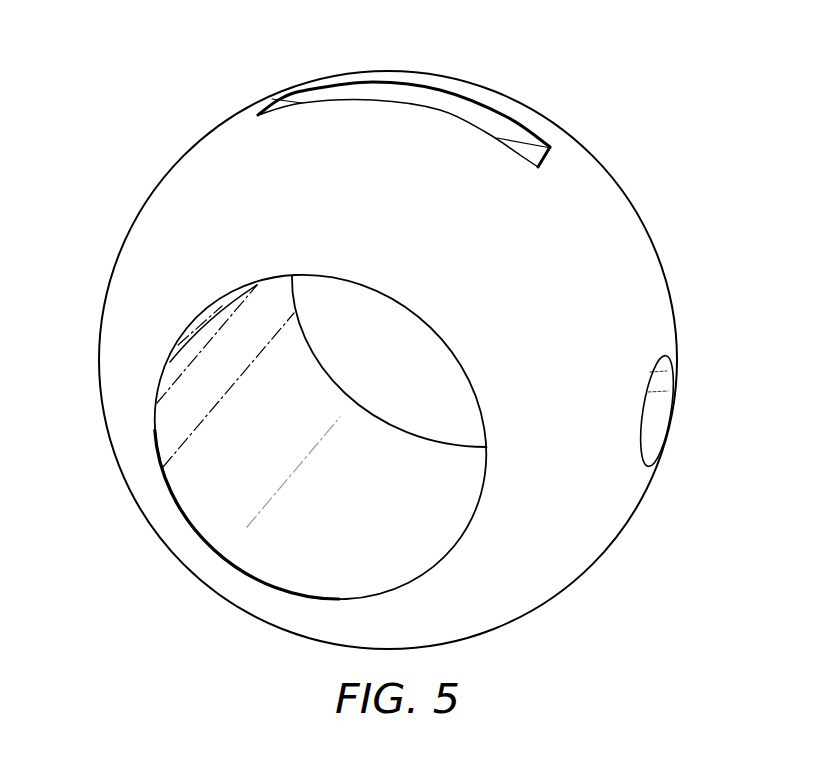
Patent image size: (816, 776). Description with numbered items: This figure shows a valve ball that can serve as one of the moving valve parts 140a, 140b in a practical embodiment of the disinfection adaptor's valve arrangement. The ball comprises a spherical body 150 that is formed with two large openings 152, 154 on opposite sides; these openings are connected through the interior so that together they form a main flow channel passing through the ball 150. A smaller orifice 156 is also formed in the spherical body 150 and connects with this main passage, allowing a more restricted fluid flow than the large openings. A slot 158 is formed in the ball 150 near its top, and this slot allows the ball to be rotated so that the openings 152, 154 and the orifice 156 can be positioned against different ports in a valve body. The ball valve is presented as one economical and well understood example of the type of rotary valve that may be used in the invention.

The moving valve part 140a is at (280, 58).
The moving valve part 140b is at (397, 349).
The spherical body 150 is at (129, 232).
The large opening 152 is at (212, 552).
The large opening 154 is at (331, 378).
The smaller orifice 156 is at (662, 412).
The slot 158 is at (413, 96).